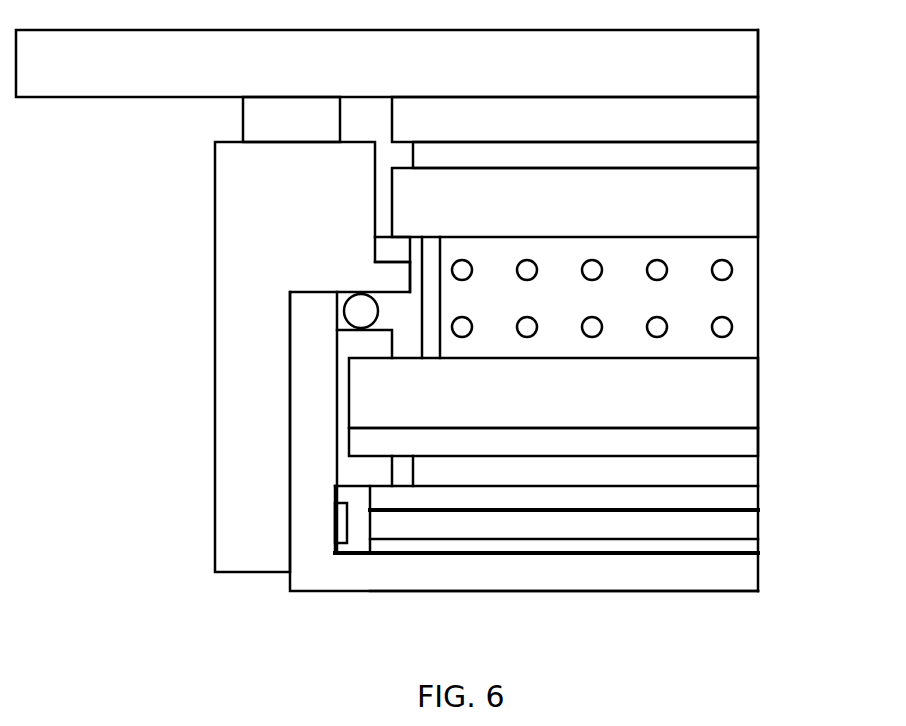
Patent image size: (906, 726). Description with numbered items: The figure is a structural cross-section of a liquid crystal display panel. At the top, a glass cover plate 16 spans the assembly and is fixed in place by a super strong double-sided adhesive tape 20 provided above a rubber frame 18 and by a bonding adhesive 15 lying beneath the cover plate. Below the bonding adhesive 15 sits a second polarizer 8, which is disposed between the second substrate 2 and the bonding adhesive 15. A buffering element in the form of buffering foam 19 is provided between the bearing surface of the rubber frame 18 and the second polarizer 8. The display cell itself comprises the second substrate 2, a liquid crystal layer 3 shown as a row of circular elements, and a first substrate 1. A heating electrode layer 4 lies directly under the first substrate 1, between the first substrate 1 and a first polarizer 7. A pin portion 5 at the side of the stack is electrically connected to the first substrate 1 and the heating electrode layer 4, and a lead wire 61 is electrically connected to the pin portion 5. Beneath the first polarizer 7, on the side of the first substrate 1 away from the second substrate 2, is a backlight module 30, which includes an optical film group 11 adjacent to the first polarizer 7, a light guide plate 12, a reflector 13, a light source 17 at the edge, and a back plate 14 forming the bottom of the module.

The glass cover plate 16 is at (718, 56).
The super strong double-sided adhesive tape 20 is at (258, 118).
The bonding adhesive 15 is at (725, 110).
The second polarizer 8 is at (733, 157).
The second substrate 2 is at (727, 203).
The rubber frame 18 is at (227, 311).
The buffering foam 19 is at (398, 248).
The lead wire 61 is at (355, 310).
The liquid crystal layer 3 is at (733, 270).
The pin portion 5 is at (362, 473).
The first substrate 1 is at (733, 402).
The heating electrode layer 4 is at (733, 441).
The first polarizer 7 is at (733, 472).
The light source 17 is at (340, 525).
The optical film group 11 is at (733, 496).
The light guide plate 12 is at (733, 526).
The reflector 13 is at (733, 547).
The back plate 14 is at (733, 572).
The backlight module 30 is at (817, 495).